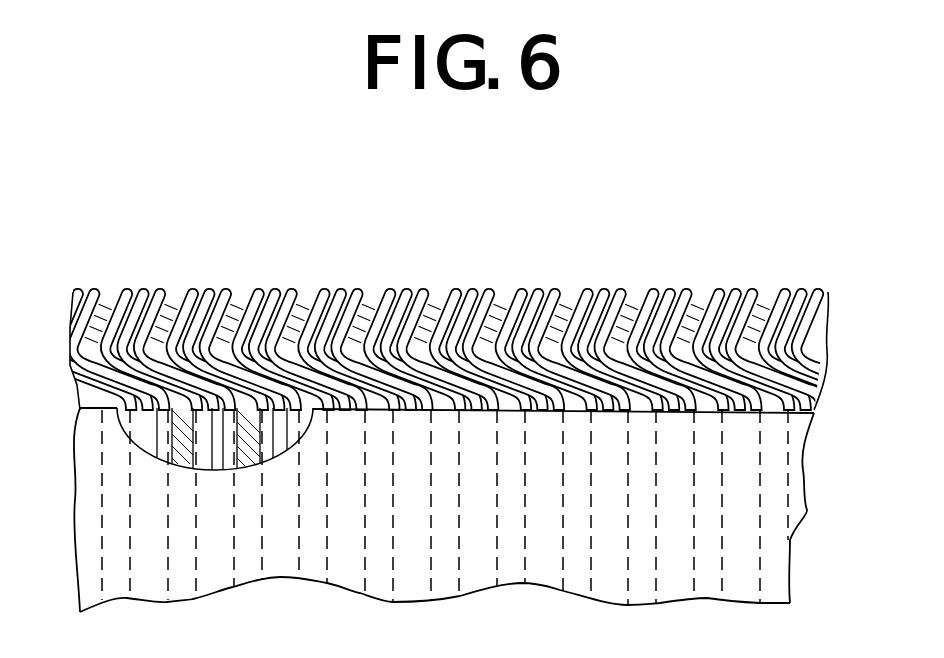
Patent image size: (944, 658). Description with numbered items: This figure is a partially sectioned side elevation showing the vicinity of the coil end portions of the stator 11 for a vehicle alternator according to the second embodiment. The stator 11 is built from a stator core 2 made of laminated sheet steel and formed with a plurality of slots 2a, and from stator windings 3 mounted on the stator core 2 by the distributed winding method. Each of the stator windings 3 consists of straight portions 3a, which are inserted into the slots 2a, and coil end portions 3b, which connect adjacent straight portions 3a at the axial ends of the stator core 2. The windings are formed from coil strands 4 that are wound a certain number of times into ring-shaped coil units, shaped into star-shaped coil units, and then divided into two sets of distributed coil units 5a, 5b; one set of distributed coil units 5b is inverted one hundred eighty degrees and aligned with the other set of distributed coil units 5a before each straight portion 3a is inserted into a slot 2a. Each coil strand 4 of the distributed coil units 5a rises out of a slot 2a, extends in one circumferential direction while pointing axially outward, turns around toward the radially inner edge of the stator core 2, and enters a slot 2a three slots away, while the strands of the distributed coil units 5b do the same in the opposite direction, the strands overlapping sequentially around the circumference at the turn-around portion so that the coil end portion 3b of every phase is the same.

The stator 11 is at (900, 322).
The stator windings 3 is at (427, 214).
The straight portions 3a is at (213, 432).
The coil end portions 3b is at (172, 280).
The distributed coil units 5a is at (455, 287).
The distributed coil units 5b is at (285, 285).
The coil strand 4 is at (540, 295).
The stator core 2 is at (814, 509).
The slots 2a is at (747, 452).